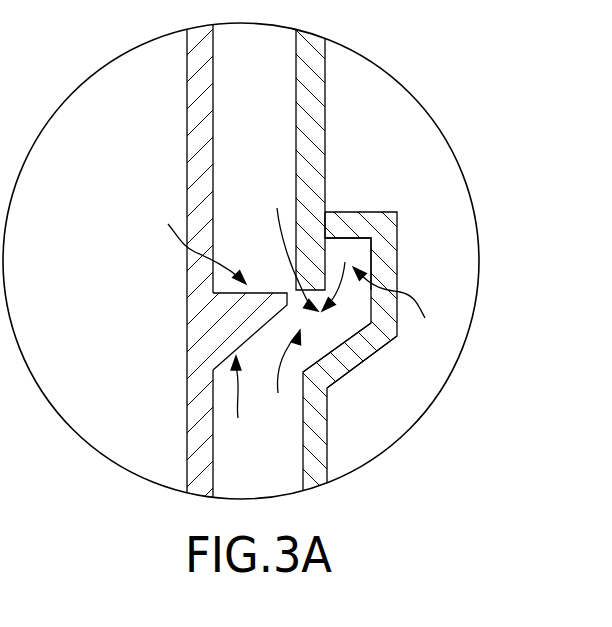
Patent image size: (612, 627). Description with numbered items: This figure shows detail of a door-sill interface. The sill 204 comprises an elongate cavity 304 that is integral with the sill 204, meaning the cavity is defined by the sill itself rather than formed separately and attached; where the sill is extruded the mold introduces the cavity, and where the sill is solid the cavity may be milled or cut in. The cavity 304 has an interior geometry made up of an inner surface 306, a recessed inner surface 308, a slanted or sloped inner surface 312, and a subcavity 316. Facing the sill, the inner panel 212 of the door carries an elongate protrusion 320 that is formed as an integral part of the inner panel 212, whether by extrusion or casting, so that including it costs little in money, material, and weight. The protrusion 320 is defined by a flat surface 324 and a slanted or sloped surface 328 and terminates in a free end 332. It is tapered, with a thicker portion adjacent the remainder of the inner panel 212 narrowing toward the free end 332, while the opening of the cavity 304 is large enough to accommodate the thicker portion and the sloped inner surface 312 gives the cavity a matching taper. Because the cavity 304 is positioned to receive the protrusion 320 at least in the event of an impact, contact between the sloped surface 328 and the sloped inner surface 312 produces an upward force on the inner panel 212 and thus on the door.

The inner panel 212 is at (203, 78).
The elongate protrusion 320 is at (243, 306).
The sill 204 is at (313, 100).
The inner surface 306 is at (334, 316).
The recessed inner surface 308 is at (358, 253).
The subcavity 316 is at (389, 301).
The slanted or sloped inner surface 312 is at (333, 327).
The free end 332 is at (286, 246).
The flat surface 324 is at (189, 243).
The elongate cavity 304 is at (278, 377).
The slanted or sloped surface 328 is at (241, 402).